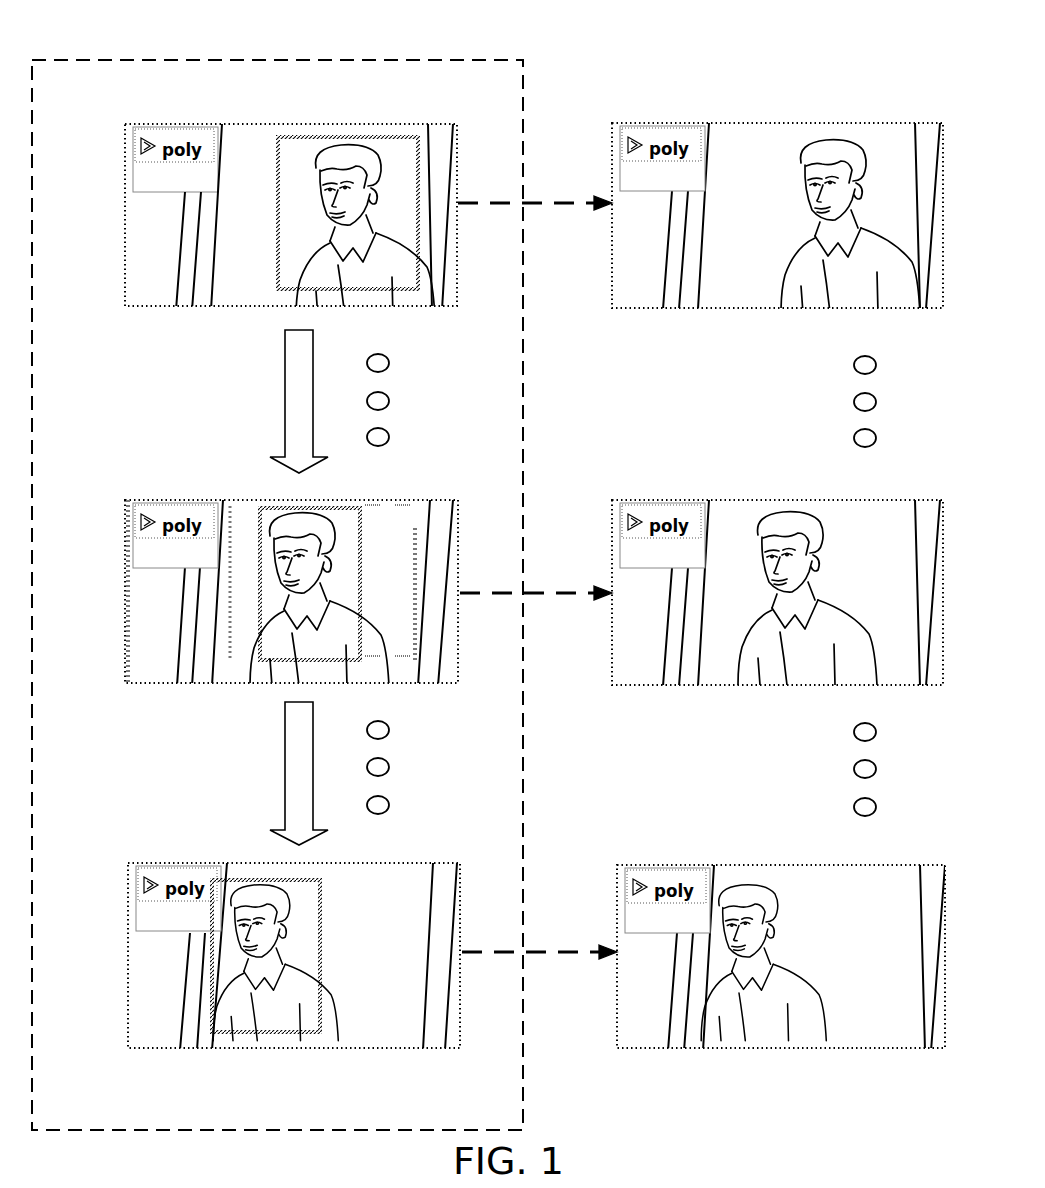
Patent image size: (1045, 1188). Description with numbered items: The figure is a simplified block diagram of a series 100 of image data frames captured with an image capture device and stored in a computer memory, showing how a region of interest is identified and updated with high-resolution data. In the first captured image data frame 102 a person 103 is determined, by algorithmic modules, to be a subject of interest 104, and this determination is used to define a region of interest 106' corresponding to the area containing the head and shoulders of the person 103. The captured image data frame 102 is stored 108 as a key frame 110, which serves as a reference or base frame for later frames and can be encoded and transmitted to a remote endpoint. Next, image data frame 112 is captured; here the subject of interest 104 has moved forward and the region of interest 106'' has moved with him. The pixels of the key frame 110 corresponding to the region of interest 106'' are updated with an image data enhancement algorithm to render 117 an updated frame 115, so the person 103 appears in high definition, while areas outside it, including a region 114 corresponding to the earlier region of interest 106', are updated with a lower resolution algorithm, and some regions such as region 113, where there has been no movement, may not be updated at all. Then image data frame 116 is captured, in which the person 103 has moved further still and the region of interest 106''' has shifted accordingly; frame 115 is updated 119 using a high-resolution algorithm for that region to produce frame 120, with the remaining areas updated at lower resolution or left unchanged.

The series of image data frames 100 is at (275, 56).
The captured image data frame 102 is at (254, 234).
The person 103 is at (426, 309).
The subject of interest 104 is at (276, 307).
The region of interest 106' is at (344, 183).
The storing 108 is at (540, 200).
The key frame 110 is at (798, 121).
The image data frame 112 is at (273, 566).
The region 113 is at (156, 663).
The region 114 is at (413, 528).
The region of interest 106'' is at (282, 554).
The updated frame 115 is at (768, 498).
The rendering 117 is at (540, 590).
The image data frame 116 is at (263, 928).
The region of interest 106''' is at (241, 926).
The updating 119 is at (540, 950).
The frame 120 is at (758, 863).